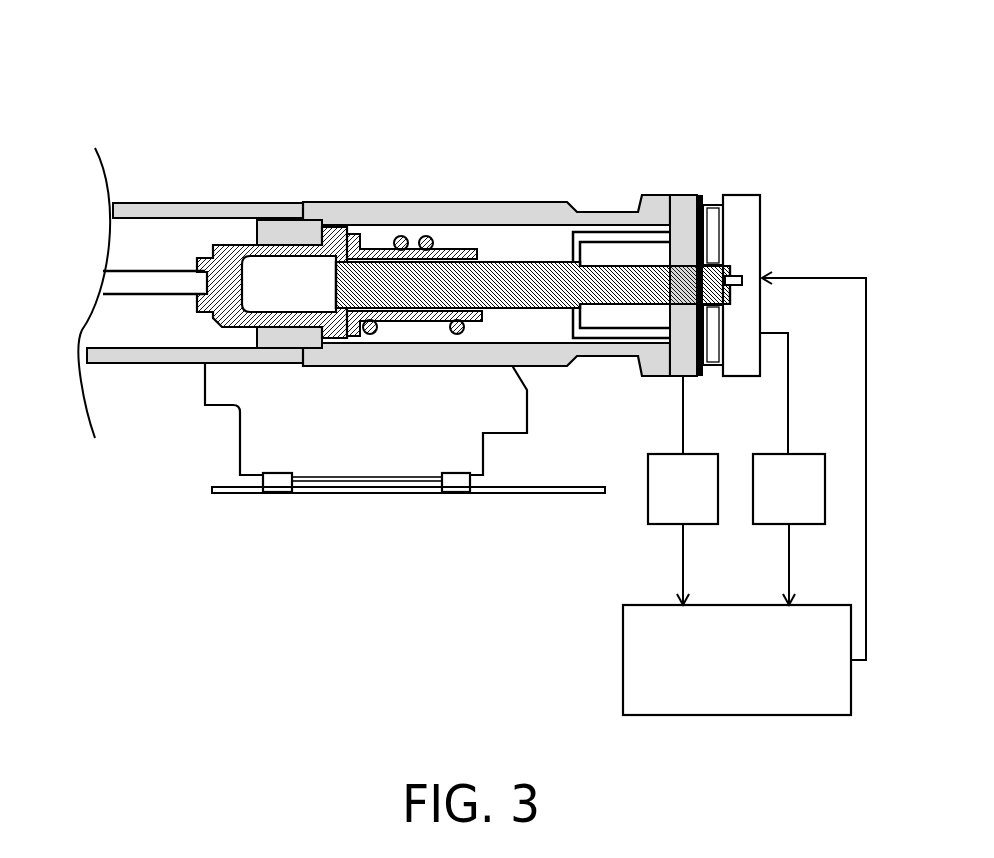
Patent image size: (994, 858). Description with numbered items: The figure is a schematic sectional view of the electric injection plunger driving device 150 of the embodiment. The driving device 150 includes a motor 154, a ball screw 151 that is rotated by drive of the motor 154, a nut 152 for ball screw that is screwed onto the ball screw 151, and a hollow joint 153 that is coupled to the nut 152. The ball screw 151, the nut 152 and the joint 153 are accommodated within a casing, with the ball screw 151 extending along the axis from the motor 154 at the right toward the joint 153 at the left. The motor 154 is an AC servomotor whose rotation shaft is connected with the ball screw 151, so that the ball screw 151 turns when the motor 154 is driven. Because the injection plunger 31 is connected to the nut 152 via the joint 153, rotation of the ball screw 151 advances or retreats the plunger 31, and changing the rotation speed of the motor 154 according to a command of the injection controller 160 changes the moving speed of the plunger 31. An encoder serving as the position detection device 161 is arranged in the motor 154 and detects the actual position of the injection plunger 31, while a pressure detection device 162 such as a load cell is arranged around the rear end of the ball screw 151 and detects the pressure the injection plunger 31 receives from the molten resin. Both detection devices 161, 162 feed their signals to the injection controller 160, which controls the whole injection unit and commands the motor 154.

The injection plunger 31 is at (137, 274).
The injection plunger driving device 150 is at (484, 172).
The ball screw 151 is at (553, 270).
The nut for ball screw 152 is at (398, 238).
The hollow joint 153 is at (217, 240).
The motor 154 is at (738, 212).
The injection controller 160 is at (623, 660).
The position detection device 161 is at (752, 456).
The pressure detection device 162 is at (648, 460).